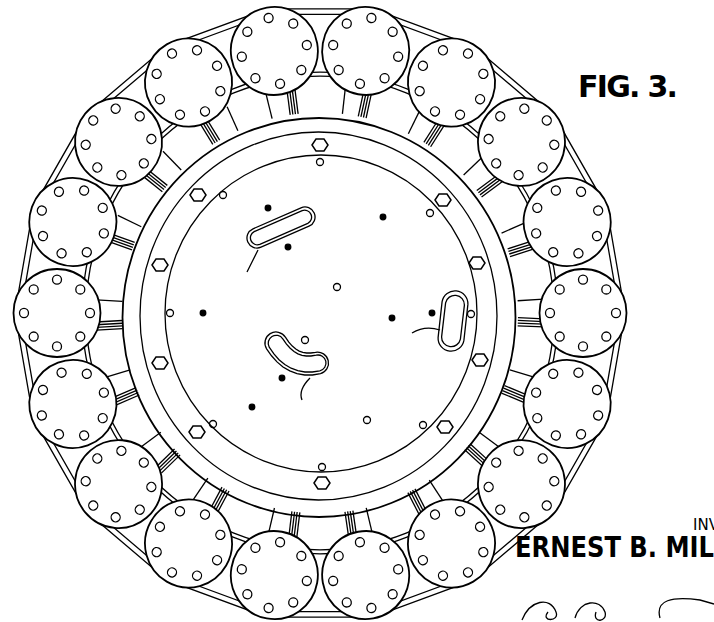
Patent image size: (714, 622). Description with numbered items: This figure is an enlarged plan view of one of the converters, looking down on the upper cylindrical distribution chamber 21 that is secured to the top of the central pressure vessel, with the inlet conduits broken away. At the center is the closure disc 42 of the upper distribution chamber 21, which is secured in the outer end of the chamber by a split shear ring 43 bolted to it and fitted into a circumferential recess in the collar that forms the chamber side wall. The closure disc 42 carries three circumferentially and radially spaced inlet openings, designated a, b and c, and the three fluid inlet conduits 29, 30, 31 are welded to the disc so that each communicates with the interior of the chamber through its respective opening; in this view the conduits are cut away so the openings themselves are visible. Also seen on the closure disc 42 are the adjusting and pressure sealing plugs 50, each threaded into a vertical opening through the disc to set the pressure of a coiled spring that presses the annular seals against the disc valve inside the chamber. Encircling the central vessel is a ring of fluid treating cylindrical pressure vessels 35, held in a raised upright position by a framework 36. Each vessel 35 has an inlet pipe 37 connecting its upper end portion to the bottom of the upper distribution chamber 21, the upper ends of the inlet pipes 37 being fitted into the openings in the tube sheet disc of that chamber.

The upper cylindrical distribution chamber 21 is at (519, 286).
The fluid inlet conduit 29 is at (447, 356).
The fluid inlet conduit 30 is at (310, 227).
The fluid inlet conduit 31 is at (326, 368).
The fluid treating cylindrical pressure vessel 35 is at (403, 23).
The framework 36 is at (572, 477).
The inlet pipe 37 is at (357, 103).
The closure disc 42 is at (416, 283).
The split shear ring 43 is at (348, 172).
The adjusting and pressure sealing plug 50 is at (338, 291).